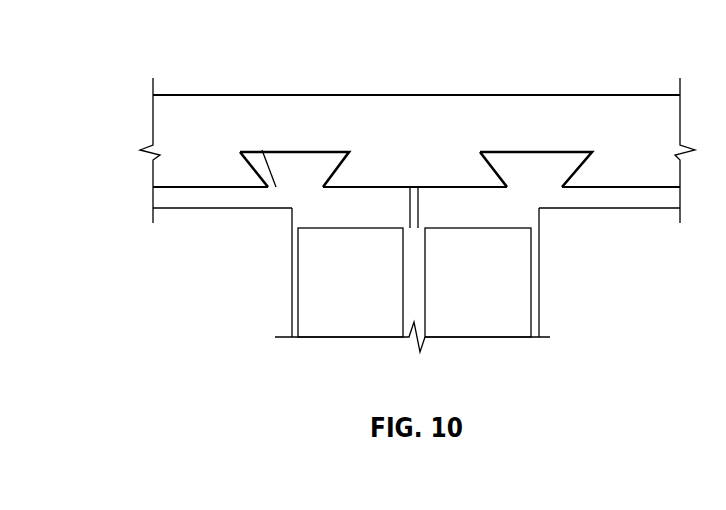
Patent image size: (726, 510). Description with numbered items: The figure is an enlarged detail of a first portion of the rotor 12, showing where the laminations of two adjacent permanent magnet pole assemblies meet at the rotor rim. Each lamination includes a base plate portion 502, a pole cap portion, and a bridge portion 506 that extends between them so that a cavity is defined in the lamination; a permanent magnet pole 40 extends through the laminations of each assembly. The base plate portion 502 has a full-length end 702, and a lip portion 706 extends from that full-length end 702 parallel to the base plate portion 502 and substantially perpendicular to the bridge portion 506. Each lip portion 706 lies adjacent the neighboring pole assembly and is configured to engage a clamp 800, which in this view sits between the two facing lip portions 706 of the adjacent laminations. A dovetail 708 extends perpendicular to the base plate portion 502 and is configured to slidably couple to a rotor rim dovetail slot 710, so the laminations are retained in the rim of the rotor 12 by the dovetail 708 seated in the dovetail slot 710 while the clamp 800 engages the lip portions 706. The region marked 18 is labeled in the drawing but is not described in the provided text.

The rotor 12 is at (587, 120).
The intermediate layer 18 is at (622, 186).
The permanent magnet pole 40 is at (228, 287).
The base plate portion 502 is at (168, 205).
The bridge portion 506 is at (291, 297).
The full-length end 702 is at (336, 140).
The lip portion 706 is at (361, 195).
The dovetail 708 is at (273, 160).
The rotor rim dovetail slot 710 is at (254, 150).
The clamp 800 is at (381, 287).